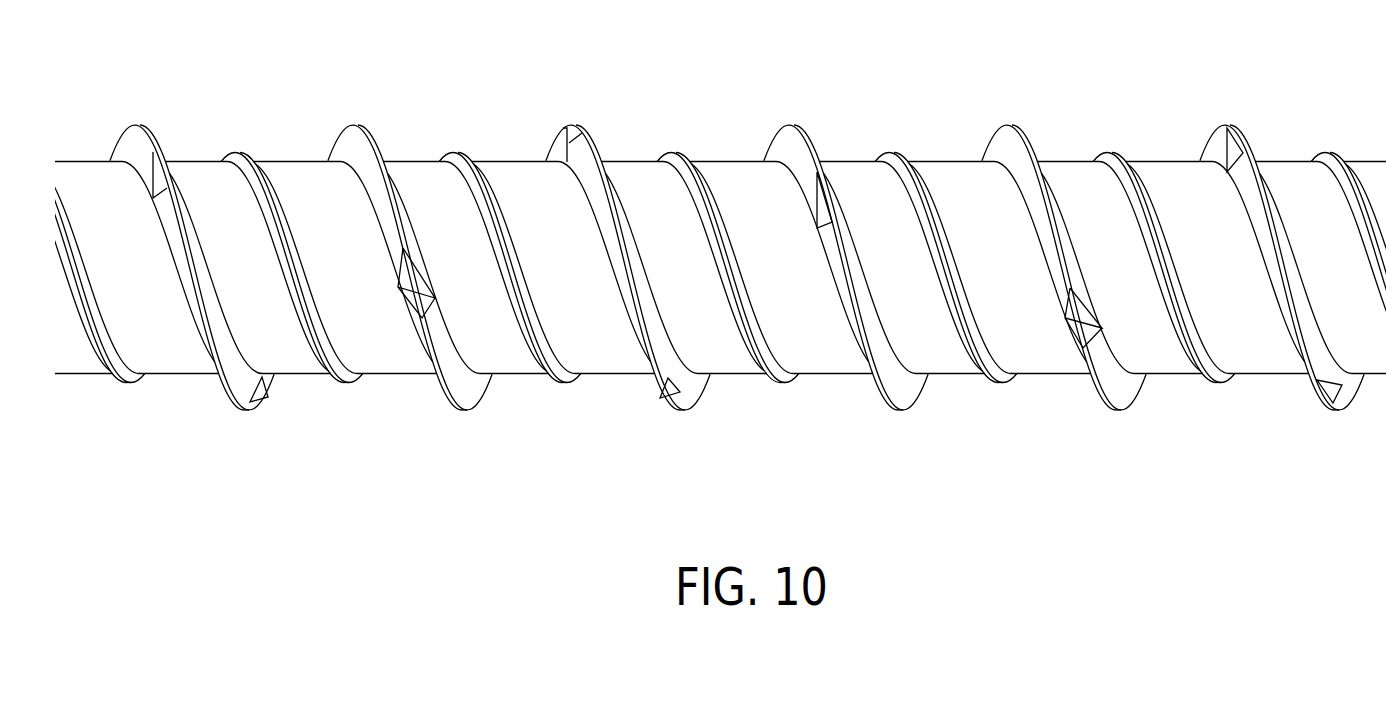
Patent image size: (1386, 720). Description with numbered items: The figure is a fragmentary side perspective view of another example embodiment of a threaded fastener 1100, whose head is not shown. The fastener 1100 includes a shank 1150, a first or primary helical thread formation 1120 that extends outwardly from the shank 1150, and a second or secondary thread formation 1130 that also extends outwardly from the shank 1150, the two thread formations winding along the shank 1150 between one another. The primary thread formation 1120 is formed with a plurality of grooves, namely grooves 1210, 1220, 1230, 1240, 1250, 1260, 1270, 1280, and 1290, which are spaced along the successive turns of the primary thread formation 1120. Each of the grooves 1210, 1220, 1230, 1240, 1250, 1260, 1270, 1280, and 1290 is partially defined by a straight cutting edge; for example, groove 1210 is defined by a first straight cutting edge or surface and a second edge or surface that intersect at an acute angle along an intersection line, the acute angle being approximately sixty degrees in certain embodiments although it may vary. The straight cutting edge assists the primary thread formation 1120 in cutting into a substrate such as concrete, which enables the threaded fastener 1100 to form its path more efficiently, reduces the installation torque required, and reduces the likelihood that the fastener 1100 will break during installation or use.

The fastener 1100 is at (538, 428).
The primary thread formation 1120 is at (791, 126).
The secondary thread formation 1130 is at (786, 387).
The shank 1150 is at (1158, 160).
The groove 1210 is at (163, 178).
The groove 1220 is at (262, 405).
The groove 1230 is at (412, 276).
The groove 1240 is at (570, 141).
The groove 1250 is at (668, 390).
The groove 1260 is at (836, 203).
The groove 1270 is at (1082, 328).
The groove 1280 is at (1238, 146).
The groove 1290 is at (1328, 390).